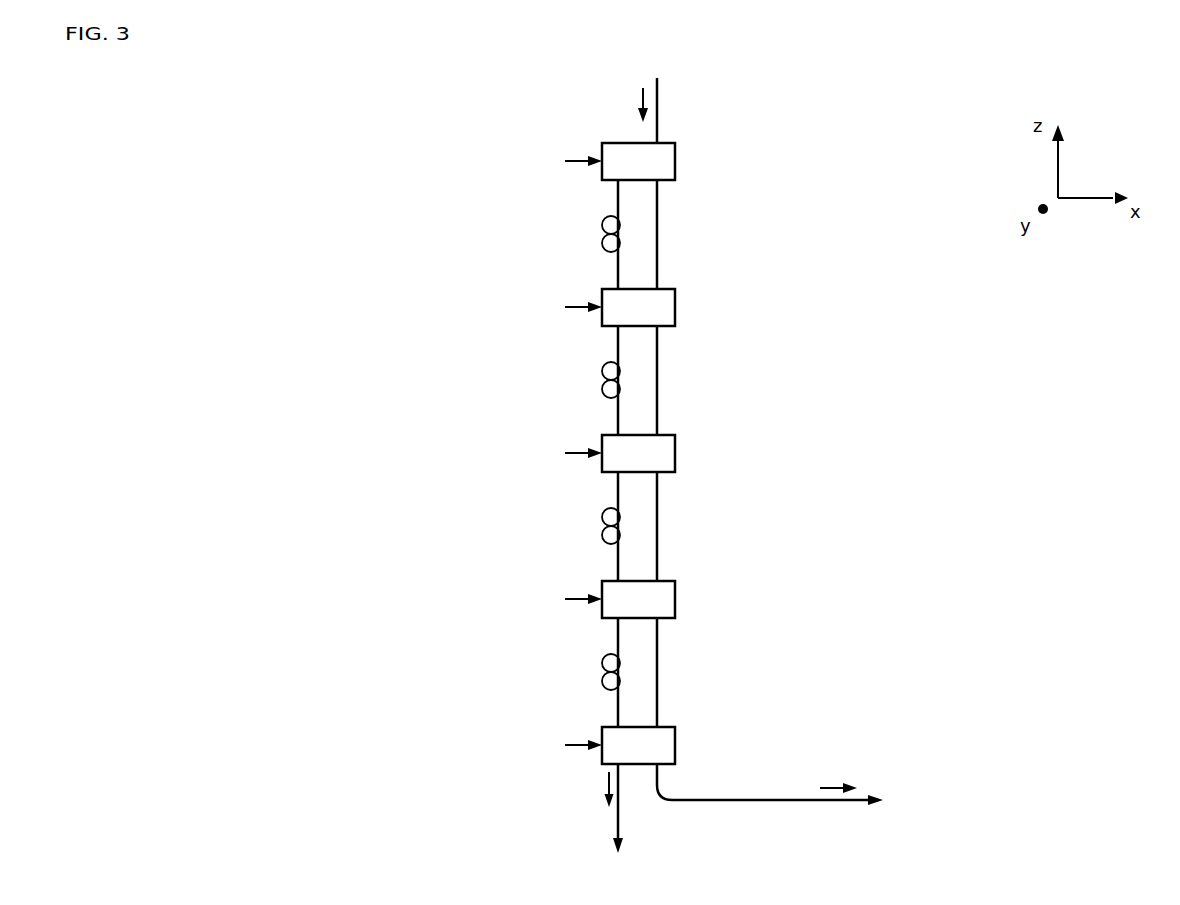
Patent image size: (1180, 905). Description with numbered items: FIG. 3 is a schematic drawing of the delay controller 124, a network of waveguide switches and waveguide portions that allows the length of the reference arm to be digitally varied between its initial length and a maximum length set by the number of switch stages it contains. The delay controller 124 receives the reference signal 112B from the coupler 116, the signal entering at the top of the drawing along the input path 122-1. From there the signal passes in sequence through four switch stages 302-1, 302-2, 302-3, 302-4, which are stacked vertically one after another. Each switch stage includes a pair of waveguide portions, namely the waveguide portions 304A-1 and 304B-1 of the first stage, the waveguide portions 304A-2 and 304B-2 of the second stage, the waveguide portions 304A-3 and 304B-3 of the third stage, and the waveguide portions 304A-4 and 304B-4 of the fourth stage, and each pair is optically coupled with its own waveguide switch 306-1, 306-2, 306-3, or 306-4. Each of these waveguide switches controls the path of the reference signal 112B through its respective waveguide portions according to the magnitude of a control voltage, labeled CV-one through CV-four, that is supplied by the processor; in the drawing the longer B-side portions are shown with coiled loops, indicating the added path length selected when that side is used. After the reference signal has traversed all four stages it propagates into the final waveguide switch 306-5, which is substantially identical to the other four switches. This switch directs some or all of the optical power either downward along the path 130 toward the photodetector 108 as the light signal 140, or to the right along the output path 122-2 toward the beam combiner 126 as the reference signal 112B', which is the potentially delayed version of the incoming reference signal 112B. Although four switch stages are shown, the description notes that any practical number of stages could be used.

The delay controller 124 is at (446, 68).
The coupler 116 is at (659, 56).
The optical fiber input 122-1 is at (657, 84).
The reference signal 112B is at (598, 105).
The waveguide switch 306-1 is at (665, 173).
The waveguide switch 306-2 is at (665, 319).
The waveguide switch 306-3 is at (665, 465).
The waveguide switch 306-4 is at (665, 611).
The waveguide switch 306-5 is at (665, 757).
The switch stage 302-1 is at (436, 189).
The switch stage 302-2 is at (436, 332).
The switch stage 302-3 is at (436, 475).
The switch stage 302-4 is at (436, 617).
The waveguide portion 304A-1 is at (657, 197).
The waveguide portion 304A-2 is at (657, 343).
The waveguide portion 304A-3 is at (657, 489).
The waveguide portion 304A-4 is at (657, 635).
The waveguide portion 304B-1 is at (618, 197).
The waveguide portion 304B-2 is at (618, 343).
The waveguide portion 304B-3 is at (618, 489).
The waveguide portion 304B-4 is at (618, 635).
The output fiber to dispersion controller 130 is at (618, 813).
The optical pulse 140 is at (605, 790).
The photodetector 108 is at (525, 871).
The output fiber to beam combiner 122-2 is at (737, 800).
The reference signal 112B' is at (846, 761).
The beam combiner 126 is at (999, 800).